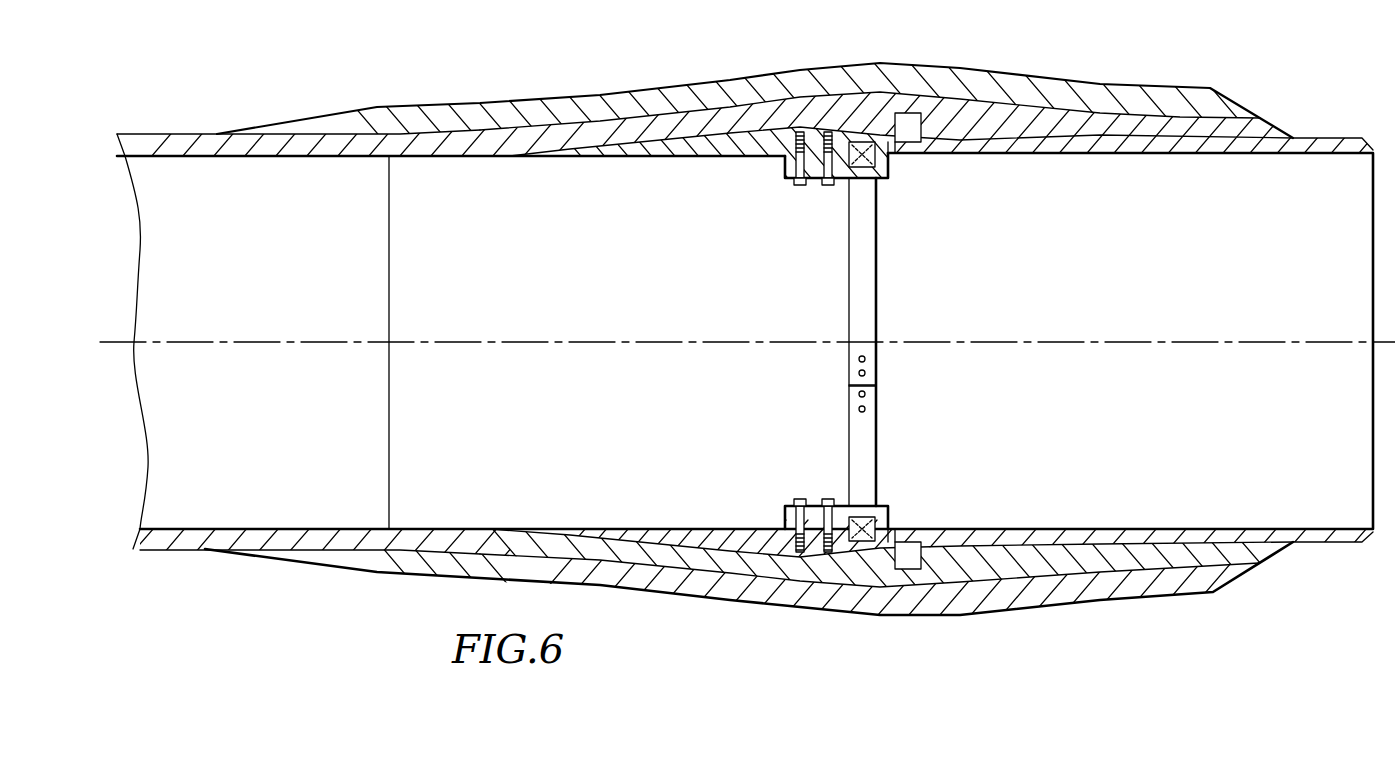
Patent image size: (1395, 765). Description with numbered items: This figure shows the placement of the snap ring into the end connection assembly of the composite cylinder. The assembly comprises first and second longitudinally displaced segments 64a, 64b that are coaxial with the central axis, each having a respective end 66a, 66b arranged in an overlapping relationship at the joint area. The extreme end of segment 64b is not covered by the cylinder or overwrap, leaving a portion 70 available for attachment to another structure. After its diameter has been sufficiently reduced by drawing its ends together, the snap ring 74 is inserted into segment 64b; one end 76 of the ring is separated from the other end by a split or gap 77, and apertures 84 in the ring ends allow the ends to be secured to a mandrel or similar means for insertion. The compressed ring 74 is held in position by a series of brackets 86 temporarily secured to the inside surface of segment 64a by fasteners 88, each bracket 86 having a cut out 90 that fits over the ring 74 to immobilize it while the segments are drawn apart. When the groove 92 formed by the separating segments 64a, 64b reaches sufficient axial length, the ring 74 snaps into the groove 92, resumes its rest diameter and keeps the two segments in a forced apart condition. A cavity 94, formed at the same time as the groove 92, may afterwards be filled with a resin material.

The first longitudinally displaced segment 64a is at (758, 137).
The second longitudinally displaced segment 64b is at (977, 130).
The end of segment 64a 66a is at (877, 125).
The end of segment 64b 66b is at (897, 155).
The portion 70 is at (1352, 137).
The snap ring 74 is at (877, 290).
The end of snap ring 76 is at (849, 408).
The split or gap 77 is at (849, 374).
The apertures 84 is at (866, 359).
The brackets 86 is at (797, 172).
The fasteners 88 is at (828, 188).
The cut out 90 is at (876, 183).
The groove 92 is at (860, 146).
The cavity 94 is at (910, 122).